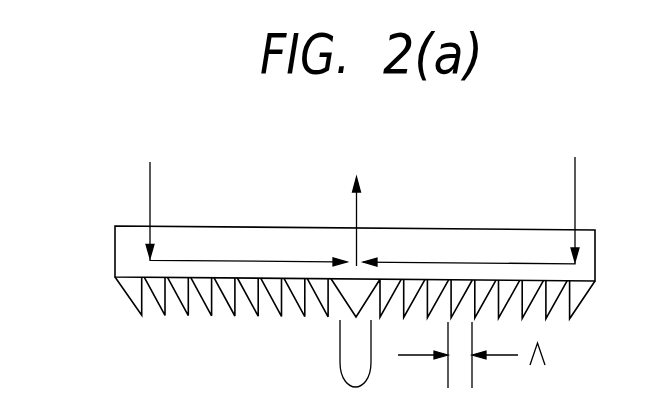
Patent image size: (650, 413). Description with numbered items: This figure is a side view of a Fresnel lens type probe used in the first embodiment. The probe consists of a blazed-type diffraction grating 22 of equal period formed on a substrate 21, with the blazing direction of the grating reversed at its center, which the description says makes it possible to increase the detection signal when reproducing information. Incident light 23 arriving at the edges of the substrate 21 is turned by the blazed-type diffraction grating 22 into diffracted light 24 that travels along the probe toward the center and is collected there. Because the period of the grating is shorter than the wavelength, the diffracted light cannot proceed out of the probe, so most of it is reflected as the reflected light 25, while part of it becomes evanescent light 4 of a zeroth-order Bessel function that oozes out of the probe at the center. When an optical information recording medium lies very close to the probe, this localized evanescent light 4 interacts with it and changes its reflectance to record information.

The substrate 21 is at (125, 243).
The blazed-type diffraction grating 22 is at (126, 292).
The incident light 23 is at (364, 194).
The diffracted light 24 is at (362, 249).
The reflected light 25 is at (357, 205).
The evanescent light 4 is at (345, 353).